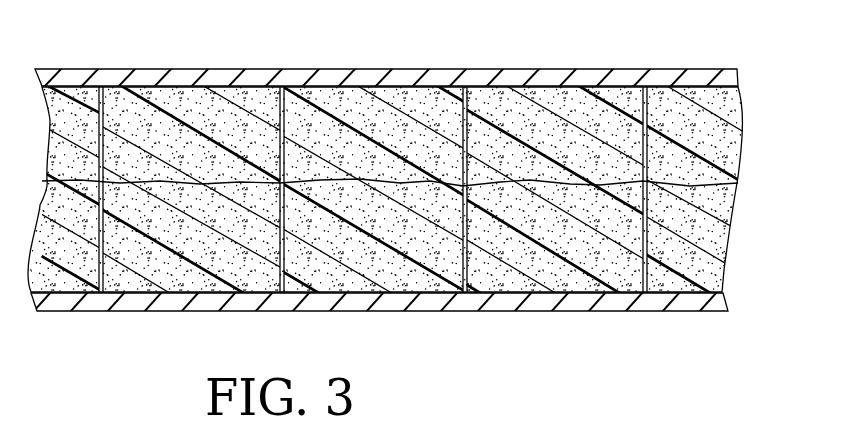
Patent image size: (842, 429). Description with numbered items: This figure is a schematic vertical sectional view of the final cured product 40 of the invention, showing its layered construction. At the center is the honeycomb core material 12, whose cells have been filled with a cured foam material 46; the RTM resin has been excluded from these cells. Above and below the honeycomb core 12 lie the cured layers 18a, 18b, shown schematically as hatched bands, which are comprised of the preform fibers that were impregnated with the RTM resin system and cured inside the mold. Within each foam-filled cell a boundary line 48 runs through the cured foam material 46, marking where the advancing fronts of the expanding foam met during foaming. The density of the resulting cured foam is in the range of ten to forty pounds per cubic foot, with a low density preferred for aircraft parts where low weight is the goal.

The final product 40 is at (412, 205).
The central honeycomb core material 12 is at (106, 127).
The cured layer 18a is at (362, 77).
The cured layer 18b is at (453, 312).
The cured foam material 46 is at (740, 131).
The boundary line 48 is at (552, 183).